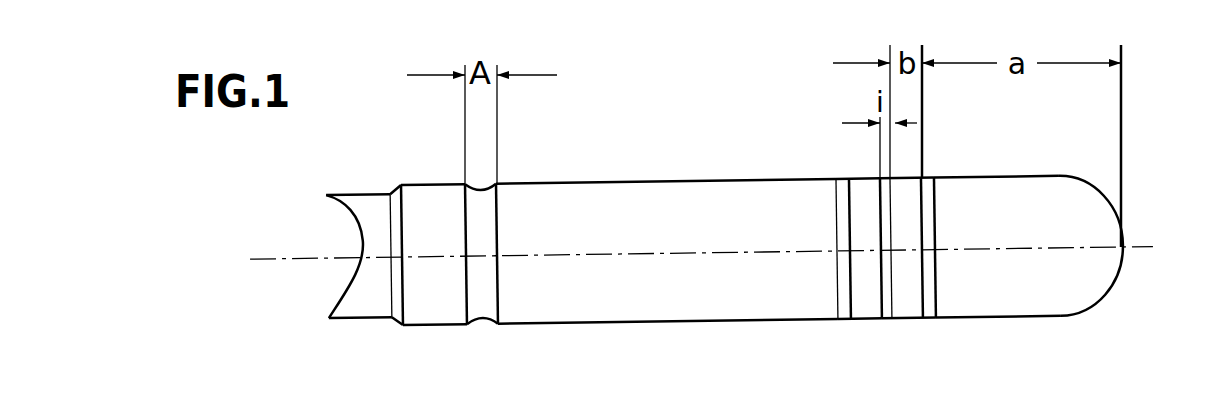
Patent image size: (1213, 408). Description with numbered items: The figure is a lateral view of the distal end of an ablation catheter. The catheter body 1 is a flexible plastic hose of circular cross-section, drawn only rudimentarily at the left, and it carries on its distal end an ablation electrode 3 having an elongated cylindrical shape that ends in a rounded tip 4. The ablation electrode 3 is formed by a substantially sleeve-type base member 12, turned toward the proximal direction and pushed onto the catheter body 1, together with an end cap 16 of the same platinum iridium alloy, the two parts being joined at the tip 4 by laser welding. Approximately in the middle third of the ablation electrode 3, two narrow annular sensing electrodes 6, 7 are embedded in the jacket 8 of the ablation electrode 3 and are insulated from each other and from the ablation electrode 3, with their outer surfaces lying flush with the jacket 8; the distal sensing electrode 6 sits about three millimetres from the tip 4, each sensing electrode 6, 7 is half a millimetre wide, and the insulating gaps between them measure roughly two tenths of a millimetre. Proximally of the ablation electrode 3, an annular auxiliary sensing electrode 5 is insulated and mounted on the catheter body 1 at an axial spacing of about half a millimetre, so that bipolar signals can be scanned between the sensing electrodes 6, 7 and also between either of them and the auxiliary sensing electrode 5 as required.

The catheter body 1 is at (368, 212).
The ablation electrode 3 is at (780, 178).
The tip 4 is at (1125, 242).
The auxiliary sensing electrode 5 is at (430, 213).
The distal sensing electrode 6 is at (912, 295).
The sensing electrode 7 is at (867, 295).
The jacket 8 is at (998, 212).
The base member 12 is at (706, 292).
The end cap 16 is at (1072, 260).